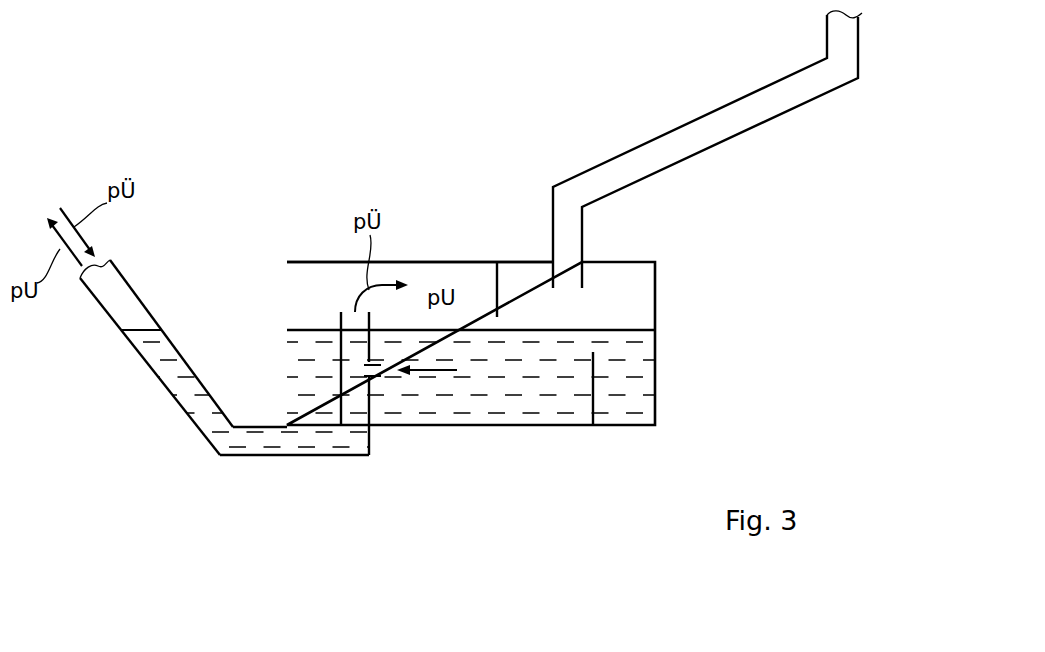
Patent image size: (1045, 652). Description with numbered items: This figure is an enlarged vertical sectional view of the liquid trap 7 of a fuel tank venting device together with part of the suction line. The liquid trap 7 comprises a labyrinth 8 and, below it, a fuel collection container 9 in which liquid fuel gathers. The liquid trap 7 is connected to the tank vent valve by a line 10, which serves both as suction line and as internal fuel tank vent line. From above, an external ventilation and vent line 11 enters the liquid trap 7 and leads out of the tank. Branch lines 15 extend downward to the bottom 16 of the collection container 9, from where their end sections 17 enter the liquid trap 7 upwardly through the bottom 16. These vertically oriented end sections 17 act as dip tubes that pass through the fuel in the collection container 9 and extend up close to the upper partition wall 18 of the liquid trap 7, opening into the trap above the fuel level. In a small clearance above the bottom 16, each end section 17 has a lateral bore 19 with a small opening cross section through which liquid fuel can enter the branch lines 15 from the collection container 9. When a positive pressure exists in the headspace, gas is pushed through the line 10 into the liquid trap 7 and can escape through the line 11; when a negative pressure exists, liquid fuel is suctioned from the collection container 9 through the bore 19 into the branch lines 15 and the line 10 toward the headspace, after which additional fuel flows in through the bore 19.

The liquid trap 7 is at (666, 341).
The labyrinth 8 is at (491, 287).
The fuel collection container 9 is at (533, 308).
The line 10 is at (145, 372).
The external ventilation and vent line 11 is at (684, 112).
The branch lines 15 is at (294, 457).
The bottom 16 is at (511, 427).
The end sections 17 is at (340, 311).
The upper partition wall 18 is at (420, 262).
The lateral bore 19 is at (400, 378).